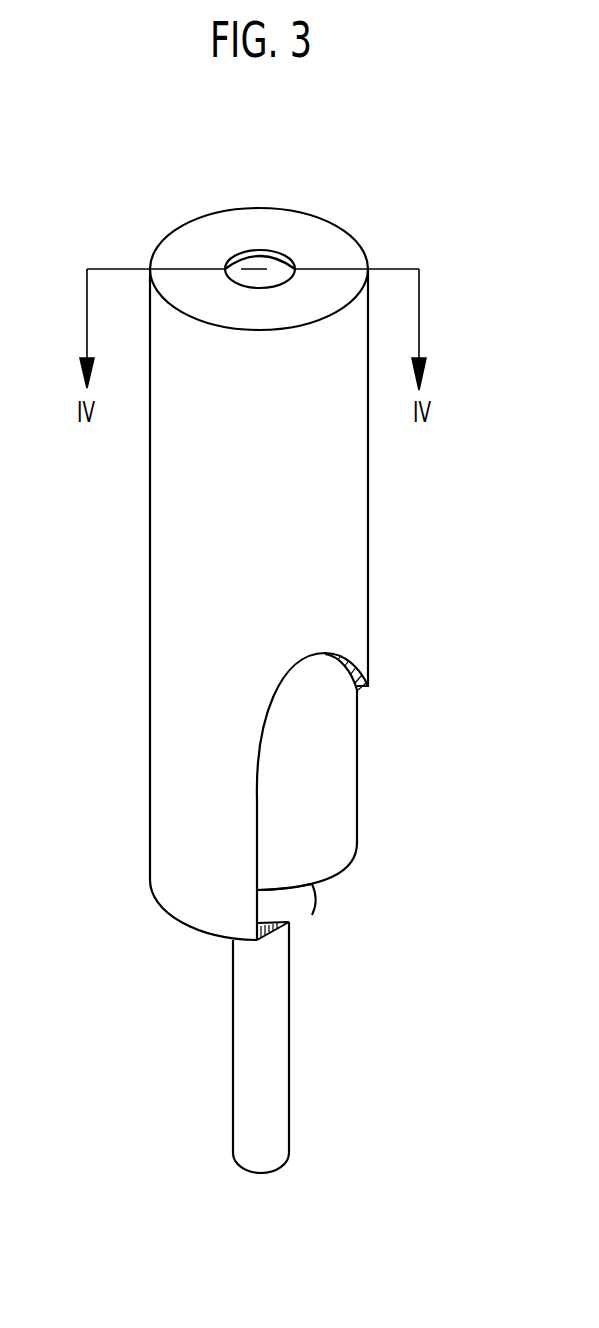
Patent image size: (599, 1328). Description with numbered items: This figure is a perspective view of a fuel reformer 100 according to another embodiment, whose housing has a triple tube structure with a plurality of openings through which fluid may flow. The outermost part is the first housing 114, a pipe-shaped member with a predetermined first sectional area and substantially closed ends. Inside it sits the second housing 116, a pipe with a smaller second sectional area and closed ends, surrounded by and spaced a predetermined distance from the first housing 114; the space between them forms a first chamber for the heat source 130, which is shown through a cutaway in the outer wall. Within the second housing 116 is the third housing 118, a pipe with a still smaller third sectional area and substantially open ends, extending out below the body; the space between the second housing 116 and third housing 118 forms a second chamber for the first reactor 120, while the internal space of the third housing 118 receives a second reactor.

The fuel reformer 100 is at (148, 222).
The first housing 114 is at (348, 588).
The heat source 130 is at (323, 732).
The second housing 116 is at (300, 900).
The first reactor 120 is at (283, 910).
The third housing 118 is at (272, 1008).